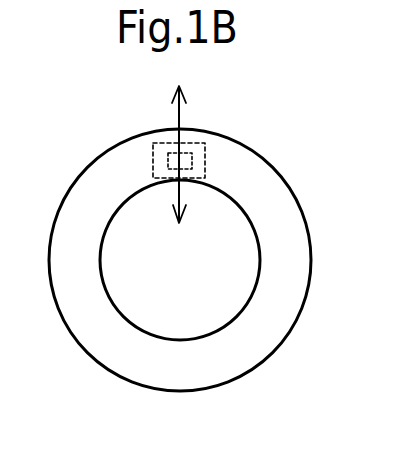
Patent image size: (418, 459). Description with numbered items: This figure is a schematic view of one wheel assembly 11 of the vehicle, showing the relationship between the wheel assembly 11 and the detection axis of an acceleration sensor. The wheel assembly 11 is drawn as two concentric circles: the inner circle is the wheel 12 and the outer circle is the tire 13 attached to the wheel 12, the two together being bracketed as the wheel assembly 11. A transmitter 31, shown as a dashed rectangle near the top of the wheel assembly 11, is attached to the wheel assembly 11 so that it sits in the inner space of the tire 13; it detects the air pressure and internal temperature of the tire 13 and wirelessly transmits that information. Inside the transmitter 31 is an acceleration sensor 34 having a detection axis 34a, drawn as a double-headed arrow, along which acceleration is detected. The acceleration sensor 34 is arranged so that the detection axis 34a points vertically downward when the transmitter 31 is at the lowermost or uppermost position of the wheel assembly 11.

The wheel assembly 11 is at (232, 260).
The wheel 12 is at (246, 213).
The tire 13 is at (311, 238).
The transmitter 31 is at (160, 143).
The acceleration sensor 34 is at (155, 162).
The detection axis 34a is at (182, 111).